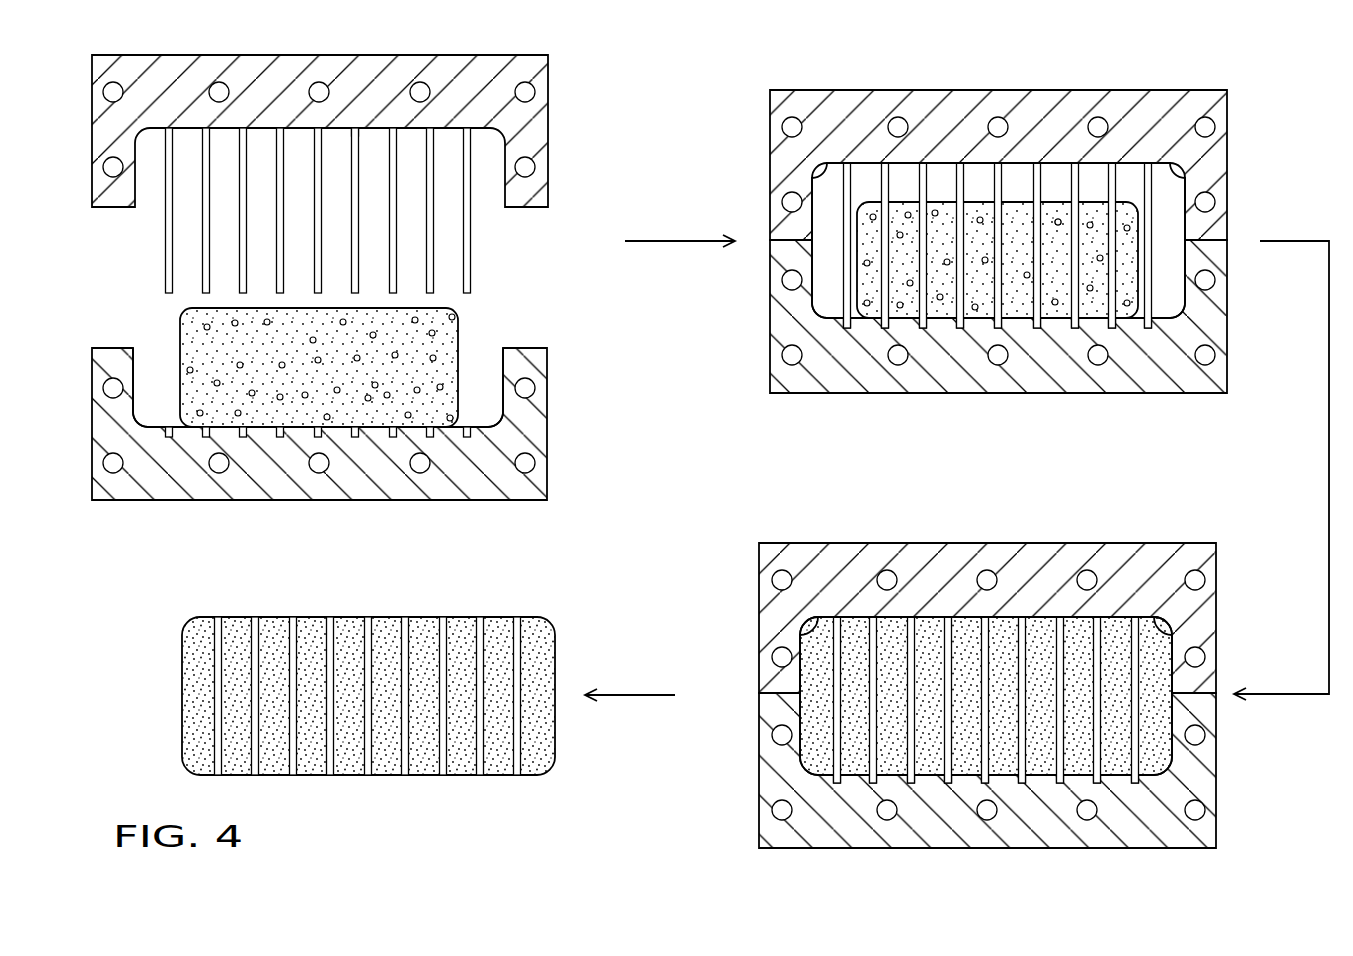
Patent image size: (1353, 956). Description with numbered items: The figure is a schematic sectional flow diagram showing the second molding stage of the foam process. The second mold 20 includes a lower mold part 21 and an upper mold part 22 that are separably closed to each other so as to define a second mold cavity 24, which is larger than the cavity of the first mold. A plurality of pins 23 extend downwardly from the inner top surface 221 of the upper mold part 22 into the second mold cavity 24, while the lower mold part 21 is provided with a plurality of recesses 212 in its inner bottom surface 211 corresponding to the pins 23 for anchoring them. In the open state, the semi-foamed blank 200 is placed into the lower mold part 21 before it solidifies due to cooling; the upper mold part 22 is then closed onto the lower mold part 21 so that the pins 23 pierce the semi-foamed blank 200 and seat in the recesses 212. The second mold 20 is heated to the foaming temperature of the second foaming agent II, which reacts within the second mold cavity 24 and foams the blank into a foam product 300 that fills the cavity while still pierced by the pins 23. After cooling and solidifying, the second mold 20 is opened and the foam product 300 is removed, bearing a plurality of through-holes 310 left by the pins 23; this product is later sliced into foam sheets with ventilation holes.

The second mold 20 is at (703, 438).
The lower mold part 21 is at (659, 548).
The upper mold part 22 is at (659, 356).
The pins 23 is at (430, 170).
The second mold cavity 24 is at (828, 183).
The inner bottom surface 211 is at (496, 502).
The recesses 212 is at (467, 438).
The inner top surface 221 is at (350, 128).
The semi-foamed blank 200 is at (460, 334).
The foam product 300 is at (677, 724).
The through-holes 310 is at (517, 765).
The second foaming agent II is at (1056, 221).